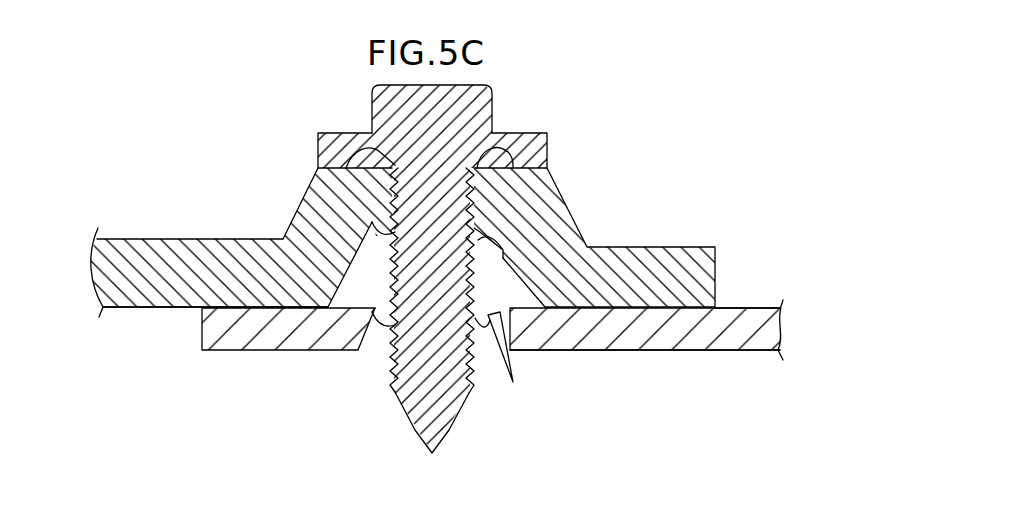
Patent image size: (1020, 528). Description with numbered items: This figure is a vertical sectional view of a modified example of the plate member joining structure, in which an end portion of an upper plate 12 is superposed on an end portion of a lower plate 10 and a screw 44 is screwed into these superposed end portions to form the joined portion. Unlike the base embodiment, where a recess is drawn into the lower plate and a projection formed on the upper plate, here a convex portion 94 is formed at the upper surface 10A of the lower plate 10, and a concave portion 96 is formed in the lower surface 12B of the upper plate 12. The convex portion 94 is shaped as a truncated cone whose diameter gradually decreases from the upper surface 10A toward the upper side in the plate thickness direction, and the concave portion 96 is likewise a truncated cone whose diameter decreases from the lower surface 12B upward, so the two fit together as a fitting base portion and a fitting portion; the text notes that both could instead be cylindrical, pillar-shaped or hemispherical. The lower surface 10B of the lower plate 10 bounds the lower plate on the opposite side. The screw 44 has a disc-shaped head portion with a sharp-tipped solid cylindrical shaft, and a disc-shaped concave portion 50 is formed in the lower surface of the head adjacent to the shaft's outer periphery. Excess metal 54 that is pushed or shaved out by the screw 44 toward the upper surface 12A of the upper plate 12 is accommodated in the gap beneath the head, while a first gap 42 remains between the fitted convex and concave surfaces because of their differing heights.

The lower plate 10 is at (752, 351).
The upper surface of the lower plate 10A is at (760, 308).
The lower surface of the lower plate 10B is at (685, 351).
The upper plate 12 is at (128, 239).
The upper surface of the upper plate 12A is at (167, 239).
The lower surface of the upper plate 12B is at (137, 308).
The first gap 42 is at (383, 298).
The screw 44 is at (493, 98).
The concave portion 50 is at (362, 162).
The excess metal 54 is at (492, 150).
The convex portion 94 is at (508, 282).
The concave portion 96 is at (355, 280).